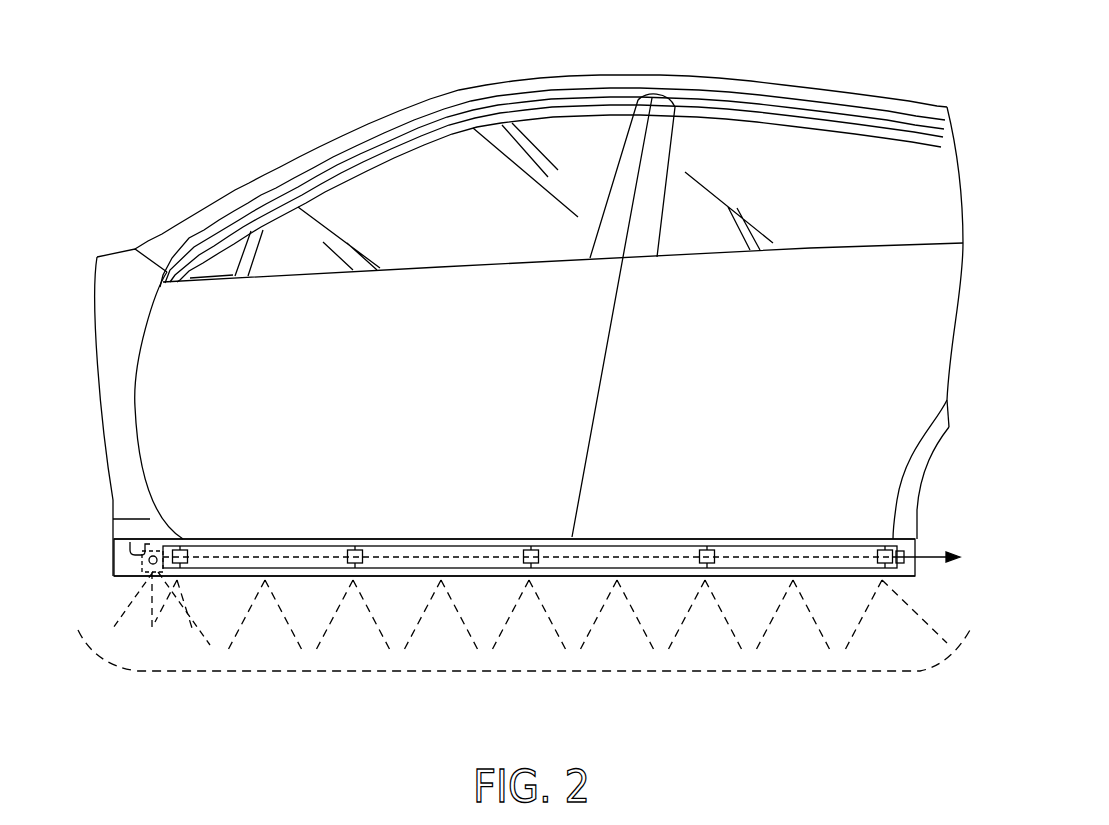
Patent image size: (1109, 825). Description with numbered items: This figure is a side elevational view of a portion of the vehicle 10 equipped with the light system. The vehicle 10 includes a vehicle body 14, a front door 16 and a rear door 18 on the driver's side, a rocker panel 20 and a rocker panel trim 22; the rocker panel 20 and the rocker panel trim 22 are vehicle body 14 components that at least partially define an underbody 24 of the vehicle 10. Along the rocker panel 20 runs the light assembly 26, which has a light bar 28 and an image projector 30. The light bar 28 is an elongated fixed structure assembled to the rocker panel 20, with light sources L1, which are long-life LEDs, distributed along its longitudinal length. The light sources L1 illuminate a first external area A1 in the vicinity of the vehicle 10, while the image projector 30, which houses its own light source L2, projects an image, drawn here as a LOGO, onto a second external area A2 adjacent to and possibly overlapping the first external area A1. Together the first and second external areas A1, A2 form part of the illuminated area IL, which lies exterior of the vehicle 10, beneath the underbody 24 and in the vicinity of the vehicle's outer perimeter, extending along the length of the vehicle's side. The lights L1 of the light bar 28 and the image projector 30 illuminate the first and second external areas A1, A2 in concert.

The vehicle 10 is at (266, 93).
The vehicle body 14 is at (771, 73).
The front door 16 is at (429, 266).
The rear door 18 is at (805, 248).
The rocker panel 20 is at (757, 538).
The rocker panel trim 22 is at (917, 547).
The underbody 24 is at (650, 577).
The light assembly 26 is at (283, 505).
The light bar 28 is at (443, 555).
The image projector 30 is at (140, 535).
The light sources L1 is at (181, 548).
The light source L2 is at (143, 558).
The first external area A1 is at (441, 693).
The second external area A2 is at (132, 693).
The illuminated area IL is at (290, 673).
The projected logo LOGO is at (156, 643).